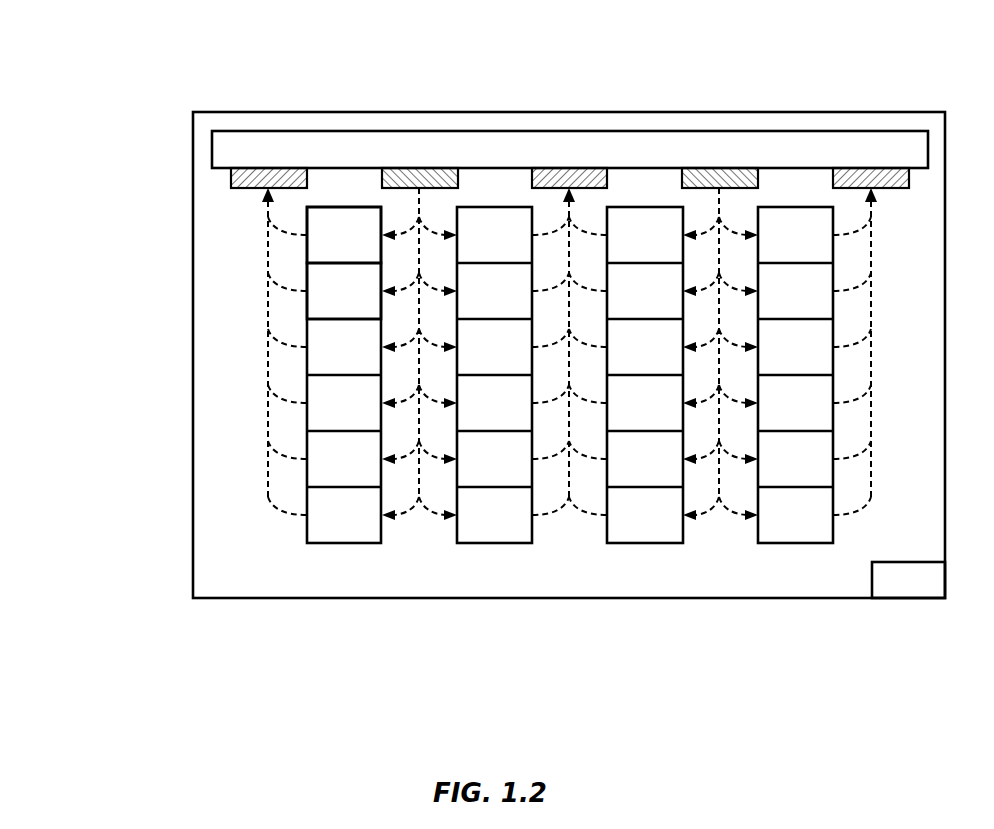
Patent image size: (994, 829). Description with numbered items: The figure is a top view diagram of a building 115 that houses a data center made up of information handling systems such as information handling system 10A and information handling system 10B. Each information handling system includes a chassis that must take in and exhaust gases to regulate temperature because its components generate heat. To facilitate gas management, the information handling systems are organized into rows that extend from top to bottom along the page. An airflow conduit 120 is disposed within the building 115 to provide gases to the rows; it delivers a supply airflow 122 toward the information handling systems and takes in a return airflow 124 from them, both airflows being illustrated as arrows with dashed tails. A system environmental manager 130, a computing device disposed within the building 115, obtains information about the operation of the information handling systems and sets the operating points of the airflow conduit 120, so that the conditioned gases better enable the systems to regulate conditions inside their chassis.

The building 115 is at (303, 73).
The airflow conduit 120 is at (743, 131).
The information handling system 10A is at (318, 243).
The information handling system 10B is at (318, 300).
The return airflow 124 is at (270, 506).
The supply airflow 122 is at (413, 506).
The system environmental manager 130 is at (872, 580).